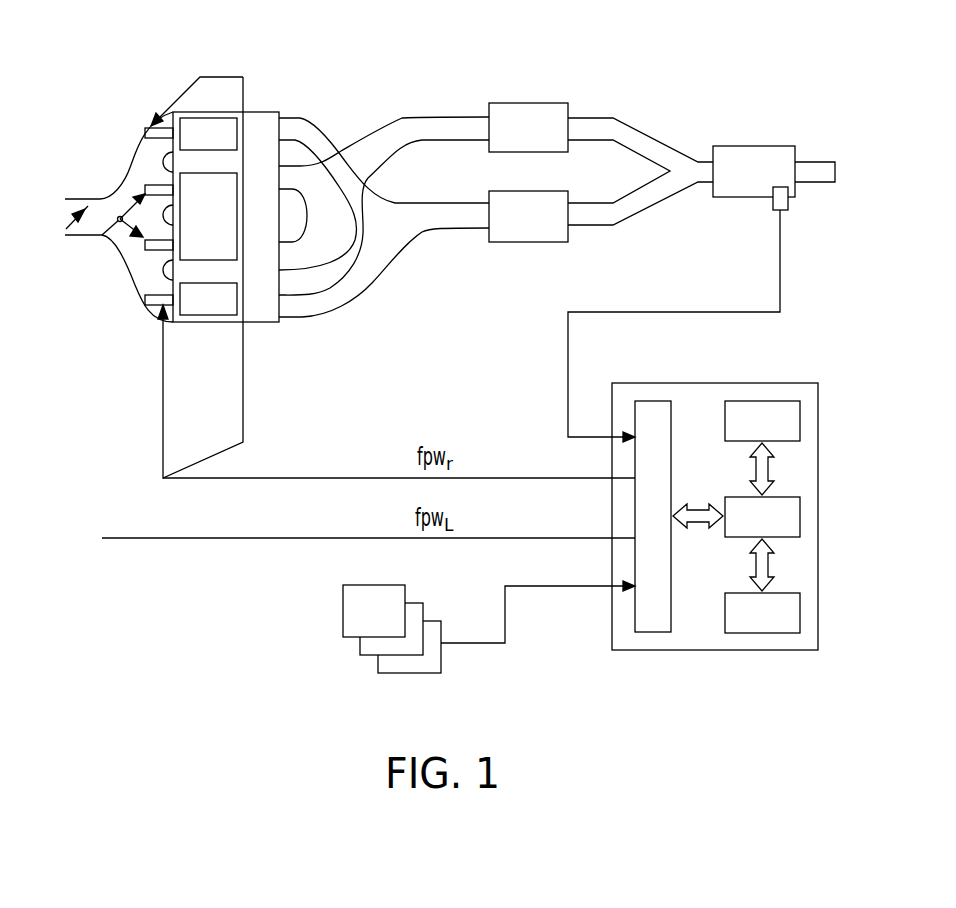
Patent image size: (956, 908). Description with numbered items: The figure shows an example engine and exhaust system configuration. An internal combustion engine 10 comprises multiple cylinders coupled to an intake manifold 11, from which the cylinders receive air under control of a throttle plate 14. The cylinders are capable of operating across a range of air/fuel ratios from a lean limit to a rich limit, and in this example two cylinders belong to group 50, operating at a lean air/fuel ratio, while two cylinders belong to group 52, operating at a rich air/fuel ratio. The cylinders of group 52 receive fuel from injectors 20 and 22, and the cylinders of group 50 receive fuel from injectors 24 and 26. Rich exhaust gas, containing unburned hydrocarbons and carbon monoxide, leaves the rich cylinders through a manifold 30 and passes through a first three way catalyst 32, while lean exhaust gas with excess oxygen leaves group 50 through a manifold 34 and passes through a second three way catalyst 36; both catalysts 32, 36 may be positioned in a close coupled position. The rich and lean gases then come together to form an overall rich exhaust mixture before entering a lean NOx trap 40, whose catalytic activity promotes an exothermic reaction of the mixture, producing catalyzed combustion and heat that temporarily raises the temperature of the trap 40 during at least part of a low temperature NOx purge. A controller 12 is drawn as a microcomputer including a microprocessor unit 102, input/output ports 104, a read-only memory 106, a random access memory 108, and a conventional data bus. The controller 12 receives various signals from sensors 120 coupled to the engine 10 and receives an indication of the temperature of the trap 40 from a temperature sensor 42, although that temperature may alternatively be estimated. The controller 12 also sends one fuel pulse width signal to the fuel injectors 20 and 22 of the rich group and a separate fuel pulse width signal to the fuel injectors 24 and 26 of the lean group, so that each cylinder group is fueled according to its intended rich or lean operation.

The internal combustion engine 10 is at (263, 326).
The intake manifold 11 is at (115, 195).
The controller 12 is at (743, 526).
The throttle plate 14 is at (78, 217).
The fuel injector 20 is at (148, 129).
The fuel injector 22 is at (145, 299).
The fuel injector 24 is at (145, 186).
The fuel injector 26 is at (145, 245).
The exhaust manifold 30 is at (364, 294).
The first three way catalyst 32 is at (530, 243).
The exhaust manifold 34 is at (377, 128).
The second three way catalyst 36 is at (530, 103).
The lean NOx trap 40 is at (742, 198).
The temperature sensor 42 is at (662, 312).
The cylinder group 50 is at (223, 173).
The cylinder group 52 is at (202, 340).
The microprocessor unit 102 is at (802, 517).
The input/output ports 104 is at (652, 401).
The read-only memory 106 is at (760, 401).
The random access memory 108 is at (802, 612).
The sensors 120 is at (343, 612).